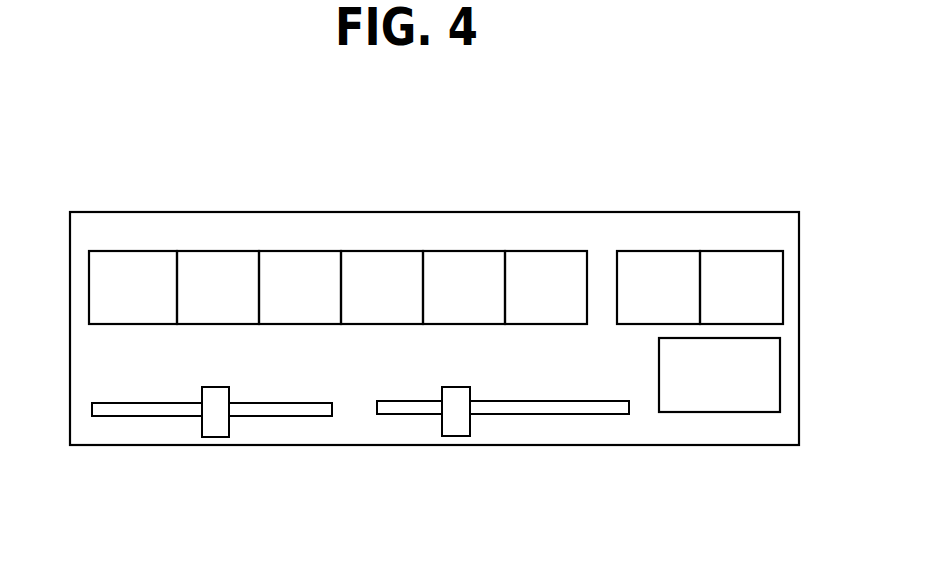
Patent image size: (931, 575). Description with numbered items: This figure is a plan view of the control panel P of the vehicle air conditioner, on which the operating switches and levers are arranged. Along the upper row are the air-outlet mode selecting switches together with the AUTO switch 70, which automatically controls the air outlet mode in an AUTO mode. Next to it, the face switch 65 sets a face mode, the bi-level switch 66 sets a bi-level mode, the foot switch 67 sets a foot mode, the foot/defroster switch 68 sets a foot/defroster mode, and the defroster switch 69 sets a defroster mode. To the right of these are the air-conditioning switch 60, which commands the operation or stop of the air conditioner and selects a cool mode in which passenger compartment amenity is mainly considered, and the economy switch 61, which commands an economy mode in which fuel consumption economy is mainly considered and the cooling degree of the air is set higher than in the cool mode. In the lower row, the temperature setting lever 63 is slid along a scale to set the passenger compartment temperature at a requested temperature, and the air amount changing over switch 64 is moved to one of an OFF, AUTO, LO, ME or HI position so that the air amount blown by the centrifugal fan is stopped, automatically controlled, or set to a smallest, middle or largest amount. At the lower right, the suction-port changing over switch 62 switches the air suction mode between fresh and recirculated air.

The control panel P is at (82, 225).
The AUTO switch 70 is at (128, 250).
The face (FACE) switch 65 is at (211, 250).
The bi-level (B/L) switch 66 is at (294, 250).
The foot (FOOT) switch 67 is at (376, 250).
The foot/defroster (F/D) switch 68 is at (458, 250).
The defroster (DEF) switch 69 is at (539, 250).
The air-conditioning (A/C) switch 60 is at (653, 250).
The economy (ECO) switch 61 is at (734, 250).
The suction-port changing over switch 62 is at (713, 412).
The temperature setting lever 63 is at (215, 430).
The air amount changing over switch 64 is at (457, 428).